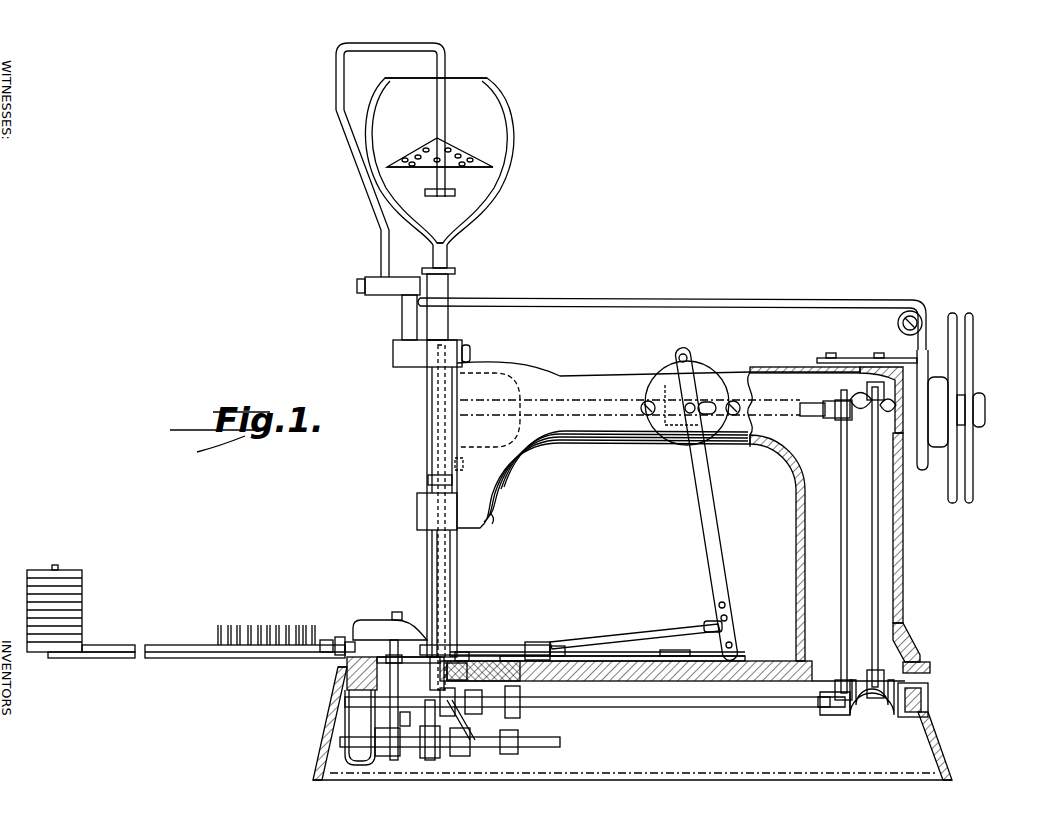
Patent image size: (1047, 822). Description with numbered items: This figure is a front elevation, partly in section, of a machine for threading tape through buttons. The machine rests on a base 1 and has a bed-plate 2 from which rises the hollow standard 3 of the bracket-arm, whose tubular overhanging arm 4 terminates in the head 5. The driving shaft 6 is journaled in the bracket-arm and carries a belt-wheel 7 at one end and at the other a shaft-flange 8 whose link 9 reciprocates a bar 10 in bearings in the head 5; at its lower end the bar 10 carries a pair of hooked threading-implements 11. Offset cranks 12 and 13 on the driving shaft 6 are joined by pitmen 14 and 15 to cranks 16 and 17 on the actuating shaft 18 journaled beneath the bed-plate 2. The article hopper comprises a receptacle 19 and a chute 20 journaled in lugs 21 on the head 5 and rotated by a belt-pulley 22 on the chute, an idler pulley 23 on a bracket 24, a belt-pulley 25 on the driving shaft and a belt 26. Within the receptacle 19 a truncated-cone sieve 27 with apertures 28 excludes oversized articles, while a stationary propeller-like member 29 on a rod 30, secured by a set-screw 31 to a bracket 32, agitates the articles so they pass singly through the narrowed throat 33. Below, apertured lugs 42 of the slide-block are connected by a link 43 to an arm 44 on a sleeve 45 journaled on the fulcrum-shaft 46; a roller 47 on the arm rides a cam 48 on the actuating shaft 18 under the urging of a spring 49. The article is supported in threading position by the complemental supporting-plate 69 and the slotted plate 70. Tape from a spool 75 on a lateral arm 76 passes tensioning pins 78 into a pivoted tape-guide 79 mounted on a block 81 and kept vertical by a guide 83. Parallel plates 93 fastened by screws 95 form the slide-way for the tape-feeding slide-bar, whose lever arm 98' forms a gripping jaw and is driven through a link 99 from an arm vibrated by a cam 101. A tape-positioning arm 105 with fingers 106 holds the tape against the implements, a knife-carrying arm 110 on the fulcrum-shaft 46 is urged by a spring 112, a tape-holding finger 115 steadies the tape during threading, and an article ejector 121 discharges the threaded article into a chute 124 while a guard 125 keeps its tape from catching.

The base 1 is at (945, 752).
The bed-plate 2 is at (766, 667).
The hollow standard 3 is at (903, 546).
The tubular overhanging arm 4 is at (620, 444).
The head 5 is at (490, 525).
The main or driving shaft 6 is at (787, 408).
The belt-wheel 7 is at (972, 362).
The shaft-flange 8 is at (495, 372).
The link 9 is at (460, 464).
The bar 10 is at (427, 438).
The hooked threading-implements 11 is at (444, 625).
The offset crank 12 is at (843, 401).
The offset crank 13 is at (876, 357).
The pitman 14 is at (841, 488).
The pitman 15 is at (872, 500).
The crank 16 is at (833, 716).
The crank 17 is at (880, 680).
The actuating shaft 18 is at (727, 708).
The receptacle 19 is at (508, 139).
The chute 20 is at (427, 562).
The lug 21 is at (393, 364).
The belt-pulley 22 is at (449, 292).
The idler pulley 23 is at (898, 323).
The bracket 24 is at (900, 358).
The belt-pulley 25 is at (922, 471).
The belt 26 is at (735, 300).
The sieve 27 is at (455, 148).
The aperture 28 is at (420, 167).
The propeller-like member 29 is at (450, 190).
The rod 30 is at (437, 103).
The set-screw 31 is at (365, 288).
The bracket 32 is at (402, 311).
The narrowed throat 33 is at (447, 248).
The apertured lug 42 is at (399, 665).
The link 43 is at (399, 690).
The arm 44 is at (420, 748).
The lateral sleeve 45 is at (458, 757).
The fulcrum-shaft 46 is at (505, 750).
The roller 47 is at (402, 721).
The cam 48 is at (425, 712).
The spring 49 is at (455, 714).
The complemental supporting-plate 69 is at (462, 651).
The plate 70 is at (455, 645).
The spool of tape 75 is at (27, 605).
The lateral arm 76 is at (113, 652).
The tensioning pins 78 is at (285, 625).
The tape-guide 79 is at (327, 640).
The block 81 is at (340, 637).
The guide 83 is at (350, 642).
The parallel plate 93 is at (745, 656).
The screw 95 is at (690, 654).
The arm of two-armed lever 98' is at (597, 635).
The link 99 is at (648, 636).
The cam 101 is at (660, 396).
The tape-positioning arm 105 is at (530, 642).
The tape-positioning finger 106 is at (718, 545).
The knife-carrying arm 110 is at (390, 757).
The spring 112 is at (365, 738).
The tape-holding finger 115 is at (452, 681).
The article ejector 121 is at (546, 645).
The chute 124 is at (395, 658).
The guard 125 is at (394, 614).